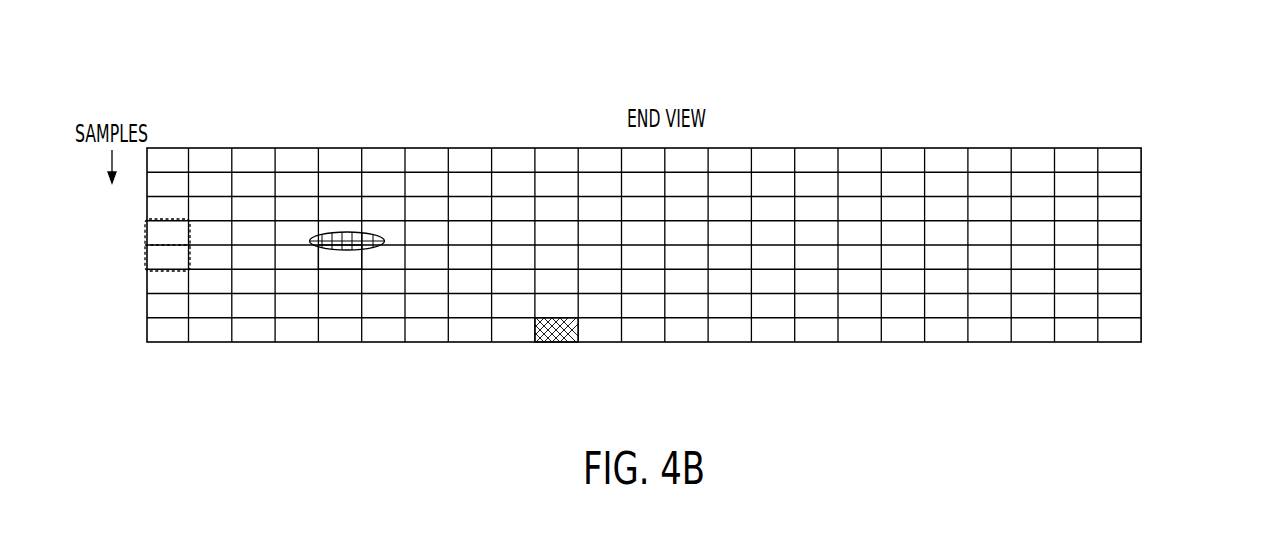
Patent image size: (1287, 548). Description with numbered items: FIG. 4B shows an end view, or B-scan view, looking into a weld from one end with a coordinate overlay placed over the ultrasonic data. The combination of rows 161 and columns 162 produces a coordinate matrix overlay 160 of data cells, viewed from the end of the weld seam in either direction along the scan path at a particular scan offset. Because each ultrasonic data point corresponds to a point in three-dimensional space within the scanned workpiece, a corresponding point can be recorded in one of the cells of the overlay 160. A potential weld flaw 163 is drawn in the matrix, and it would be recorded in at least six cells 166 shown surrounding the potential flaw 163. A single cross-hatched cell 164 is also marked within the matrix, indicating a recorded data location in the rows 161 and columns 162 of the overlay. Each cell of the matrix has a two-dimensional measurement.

The coordinate matrix overlay 160 is at (702, 205).
The rows 161 is at (177, 142).
The columns 162 is at (1172, 158).
The potential weld flaw 163 is at (312, 252).
The cross-hatched cell 164 is at (547, 343).
The cells 166 is at (343, 271).